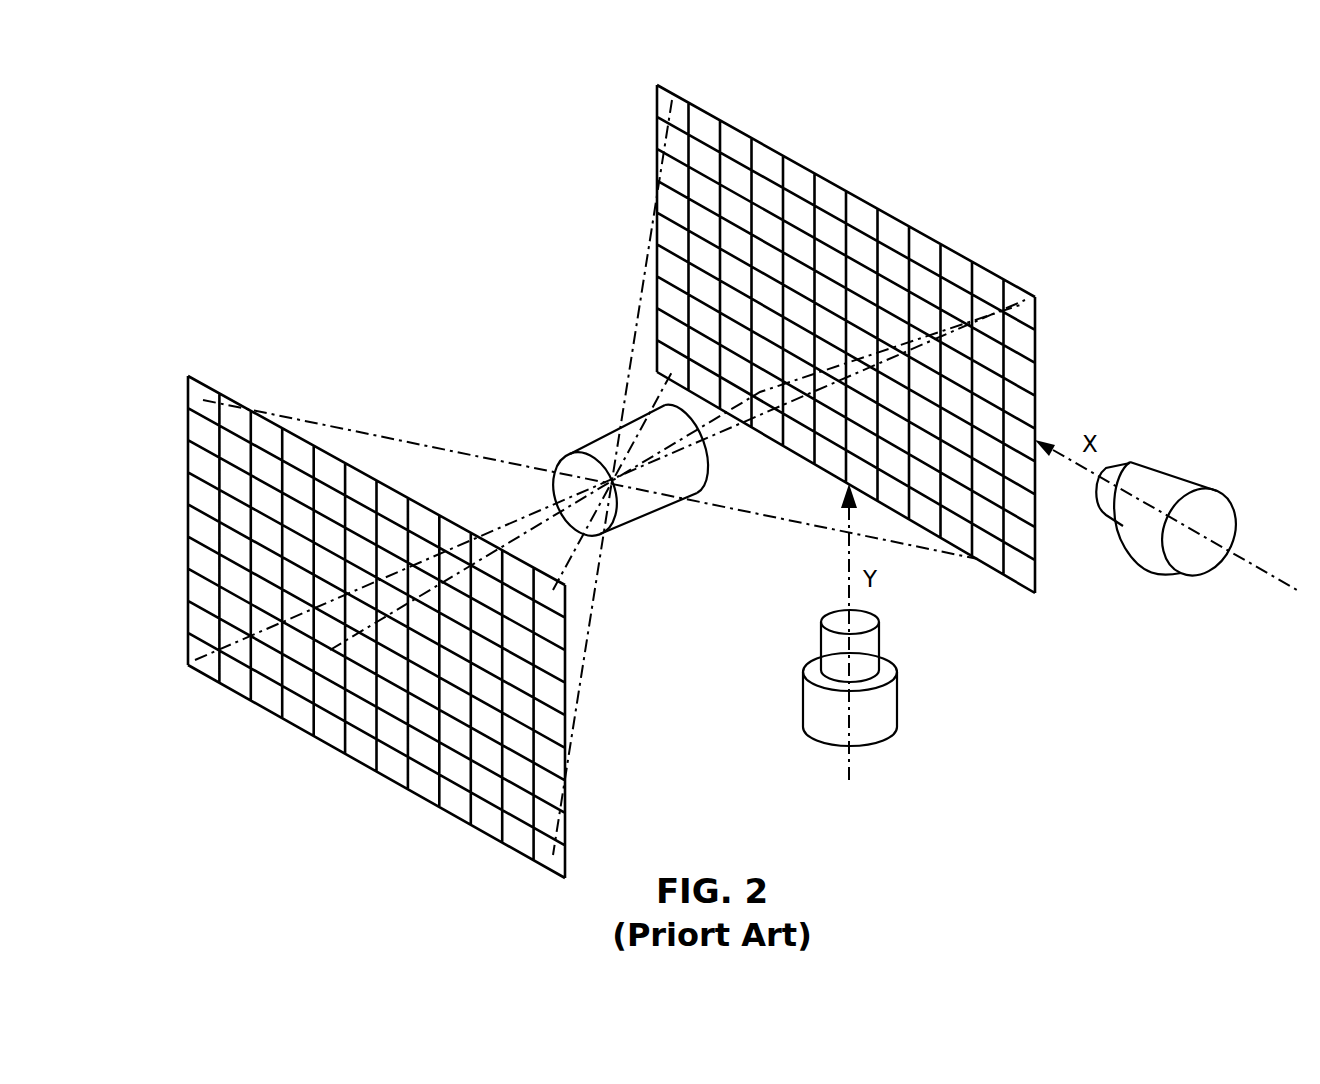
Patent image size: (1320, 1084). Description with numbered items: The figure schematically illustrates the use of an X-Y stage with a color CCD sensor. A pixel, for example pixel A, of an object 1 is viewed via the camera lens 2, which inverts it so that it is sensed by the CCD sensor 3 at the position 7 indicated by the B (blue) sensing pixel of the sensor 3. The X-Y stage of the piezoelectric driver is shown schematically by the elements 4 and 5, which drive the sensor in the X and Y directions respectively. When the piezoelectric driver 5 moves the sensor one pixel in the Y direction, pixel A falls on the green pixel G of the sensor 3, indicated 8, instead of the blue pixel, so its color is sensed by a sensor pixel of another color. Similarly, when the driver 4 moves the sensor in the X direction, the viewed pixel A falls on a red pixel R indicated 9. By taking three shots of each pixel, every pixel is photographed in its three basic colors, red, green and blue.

The object 1 is at (263, 710).
The camera lens 2 is at (600, 447).
The CCD sensor 3 is at (775, 197).
The piezoelectric driver 4 is at (1178, 478).
The piezoelectric driver 5 is at (832, 717).
The position indicated by B (blue) sensing pixel 7 is at (1038, 572).
The pixel G (green) of the sensor 8 is at (1038, 542).
The pixel of another color R (red) 9 is at (987, 575).